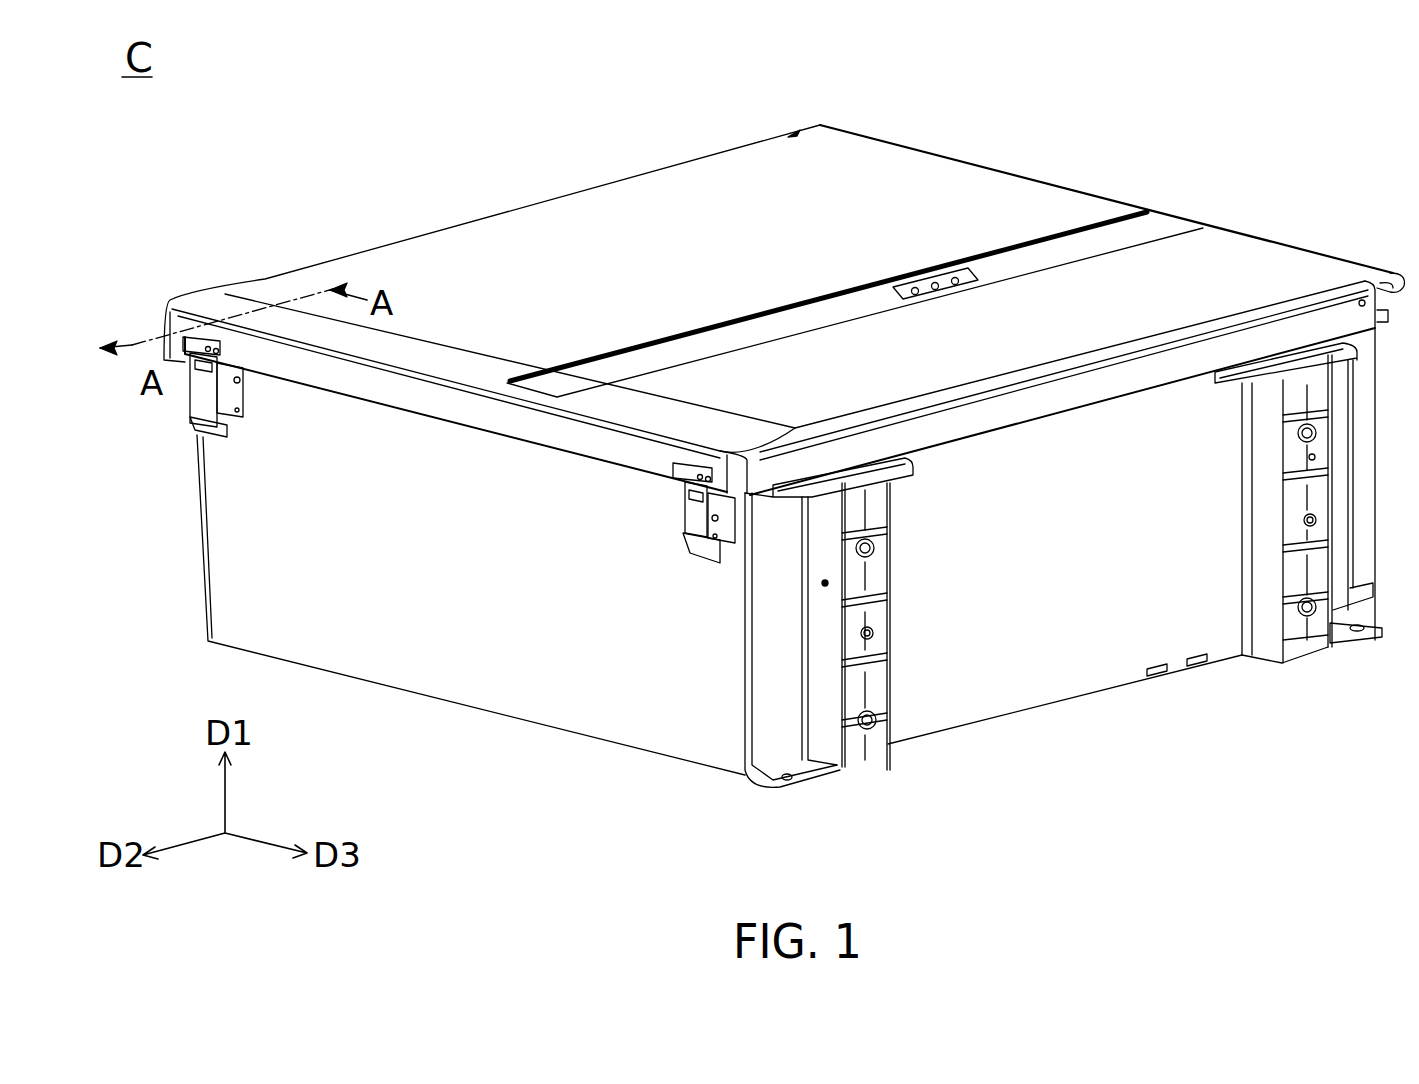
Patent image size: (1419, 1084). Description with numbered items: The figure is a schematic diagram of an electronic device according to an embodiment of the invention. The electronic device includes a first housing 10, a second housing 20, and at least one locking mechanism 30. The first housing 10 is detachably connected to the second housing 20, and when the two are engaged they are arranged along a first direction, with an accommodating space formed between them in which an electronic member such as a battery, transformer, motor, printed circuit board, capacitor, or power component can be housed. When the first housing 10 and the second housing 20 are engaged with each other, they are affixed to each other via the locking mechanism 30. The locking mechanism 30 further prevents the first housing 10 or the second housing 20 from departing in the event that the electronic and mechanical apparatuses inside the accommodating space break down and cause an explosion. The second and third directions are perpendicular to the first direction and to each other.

The first housing 10 is at (1273, 264).
The second housing 20 is at (1043, 677).
The locking mechanism 30 is at (187, 432).